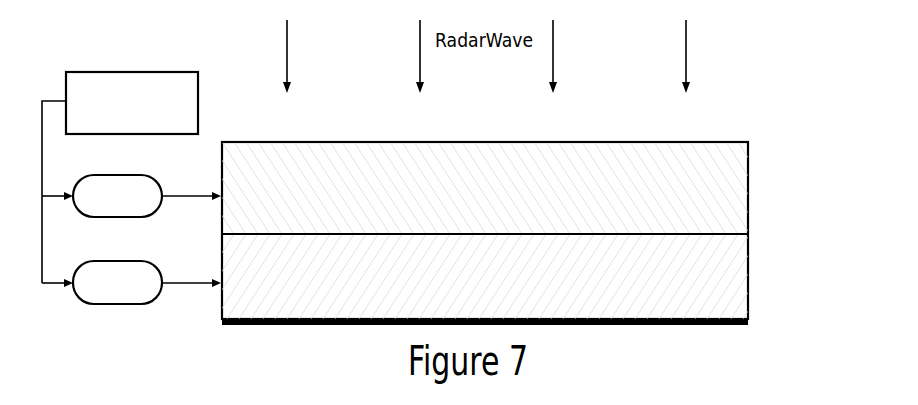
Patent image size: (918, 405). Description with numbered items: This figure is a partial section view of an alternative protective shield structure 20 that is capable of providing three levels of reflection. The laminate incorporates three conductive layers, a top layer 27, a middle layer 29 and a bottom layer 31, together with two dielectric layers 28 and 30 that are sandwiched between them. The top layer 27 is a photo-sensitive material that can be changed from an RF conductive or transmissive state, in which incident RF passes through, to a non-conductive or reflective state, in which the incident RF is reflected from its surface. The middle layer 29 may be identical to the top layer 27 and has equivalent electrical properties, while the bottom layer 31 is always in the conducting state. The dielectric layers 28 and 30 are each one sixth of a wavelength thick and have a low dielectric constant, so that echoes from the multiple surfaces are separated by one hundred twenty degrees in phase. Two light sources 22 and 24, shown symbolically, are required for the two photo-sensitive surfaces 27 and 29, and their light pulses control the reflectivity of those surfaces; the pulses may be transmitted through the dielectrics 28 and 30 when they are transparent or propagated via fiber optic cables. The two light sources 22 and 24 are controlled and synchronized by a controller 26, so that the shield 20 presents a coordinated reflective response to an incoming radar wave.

The multilayer body / coated panel 20 is at (764, 203).
The light source 22 is at (131, 201).
The light source 24 is at (131, 287).
The controller 26 is at (133, 72).
The top layer 27 is at (749, 142).
The dielectric layer 28 is at (749, 172).
The middle layer 29 is at (749, 234).
The dielectric layer 30 is at (749, 283).
The bottom layer 31 is at (749, 322).